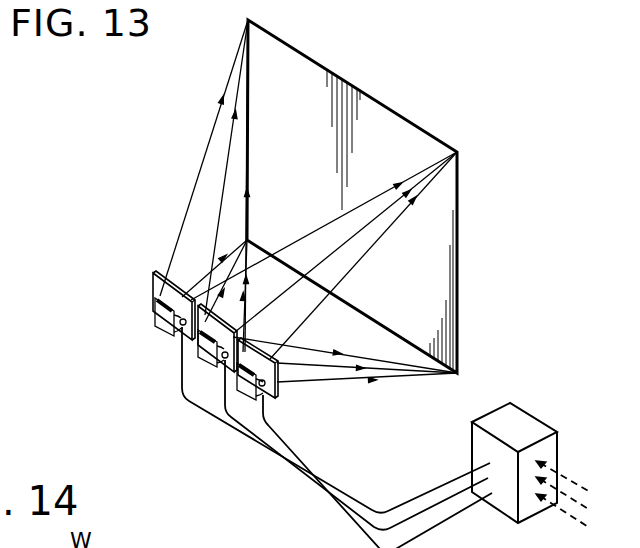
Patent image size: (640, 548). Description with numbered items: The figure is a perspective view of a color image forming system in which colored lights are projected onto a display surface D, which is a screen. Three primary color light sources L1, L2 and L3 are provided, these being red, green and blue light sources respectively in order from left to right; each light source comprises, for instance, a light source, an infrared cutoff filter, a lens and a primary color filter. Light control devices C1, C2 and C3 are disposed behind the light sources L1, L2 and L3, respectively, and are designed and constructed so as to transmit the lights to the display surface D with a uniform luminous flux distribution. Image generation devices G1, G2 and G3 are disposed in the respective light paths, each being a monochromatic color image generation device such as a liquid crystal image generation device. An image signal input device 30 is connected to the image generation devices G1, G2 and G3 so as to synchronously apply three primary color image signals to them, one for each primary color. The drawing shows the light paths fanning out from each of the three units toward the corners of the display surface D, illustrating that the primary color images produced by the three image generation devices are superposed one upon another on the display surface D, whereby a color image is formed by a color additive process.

The display surface D is at (358, 95).
The image generation device G1 is at (155, 282).
The image generation device G2 is at (231, 331).
The image generation device G3 is at (280, 388).
The light control device C1 is at (157, 318).
The light control device C2 is at (204, 346).
The light control device C3 is at (243, 378).
The primary color light source L1 is at (180, 326).
The primary color light source L2 is at (223, 359).
The primary color light source L3 is at (262, 394).
The image signal input device 30 is at (508, 416).